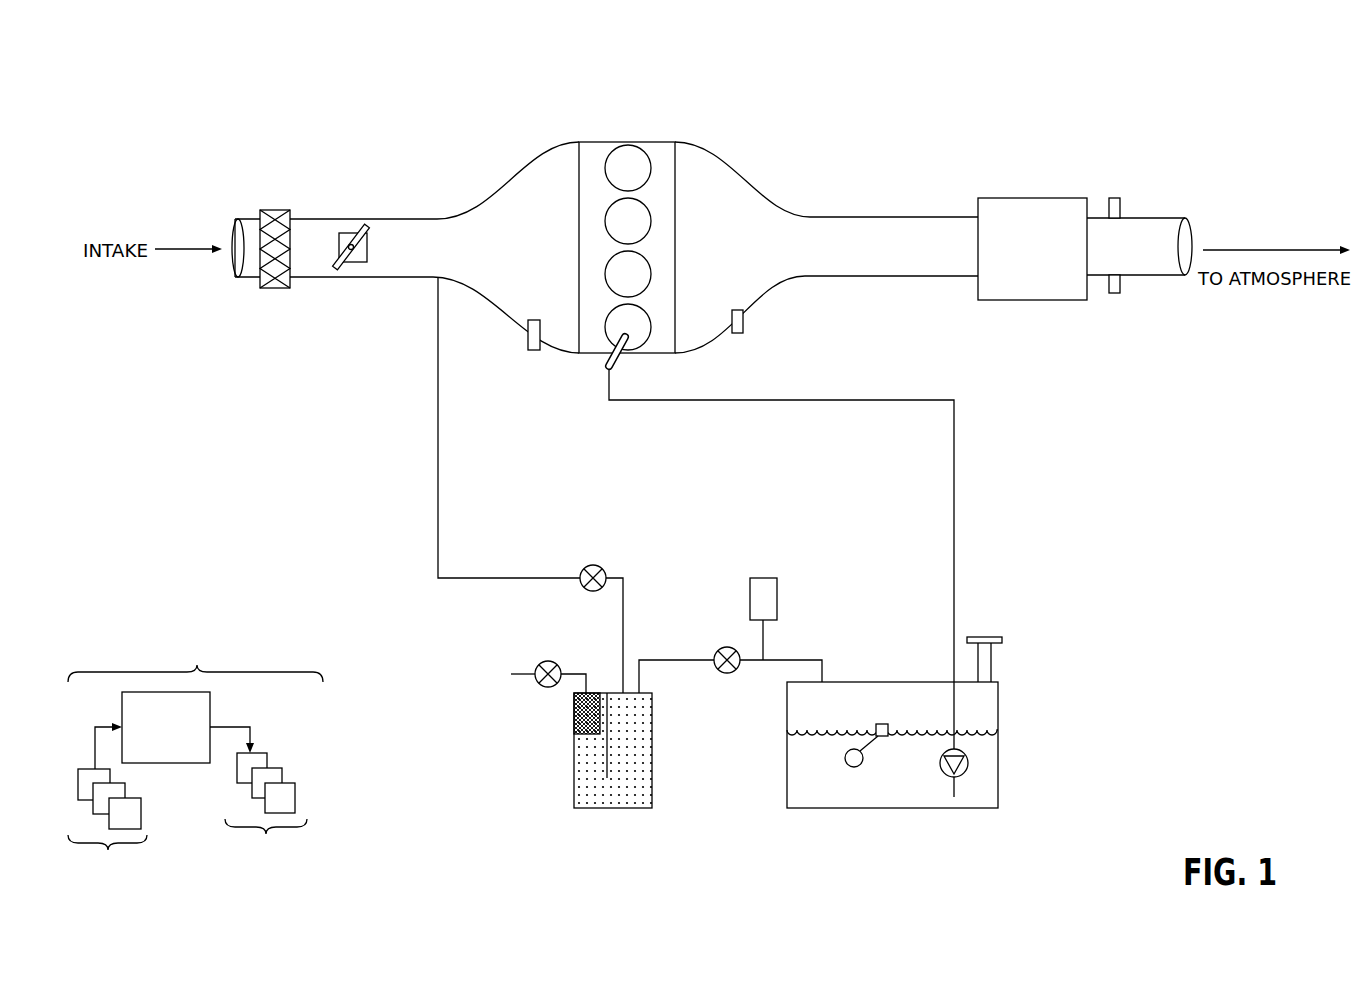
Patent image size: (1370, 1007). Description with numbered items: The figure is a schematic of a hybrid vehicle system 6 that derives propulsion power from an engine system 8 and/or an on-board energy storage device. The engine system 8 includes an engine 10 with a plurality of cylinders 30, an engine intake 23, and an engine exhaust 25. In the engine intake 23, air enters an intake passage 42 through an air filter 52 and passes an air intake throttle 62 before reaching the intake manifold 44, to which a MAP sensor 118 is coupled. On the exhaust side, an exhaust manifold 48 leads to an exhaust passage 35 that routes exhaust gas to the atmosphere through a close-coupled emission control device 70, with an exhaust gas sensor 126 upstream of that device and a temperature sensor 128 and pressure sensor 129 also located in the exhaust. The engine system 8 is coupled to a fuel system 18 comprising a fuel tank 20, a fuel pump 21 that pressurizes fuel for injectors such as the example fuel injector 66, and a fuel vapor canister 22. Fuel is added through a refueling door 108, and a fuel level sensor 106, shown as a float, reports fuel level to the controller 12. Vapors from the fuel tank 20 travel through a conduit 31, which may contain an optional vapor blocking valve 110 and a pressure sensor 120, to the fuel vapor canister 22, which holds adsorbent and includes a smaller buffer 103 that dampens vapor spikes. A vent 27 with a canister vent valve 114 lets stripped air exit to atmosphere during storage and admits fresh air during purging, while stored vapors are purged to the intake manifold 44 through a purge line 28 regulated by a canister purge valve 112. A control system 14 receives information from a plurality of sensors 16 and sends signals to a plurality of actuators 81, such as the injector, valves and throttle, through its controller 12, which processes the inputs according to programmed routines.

The hybrid vehicle system 6 is at (128, 122).
The engine system 8 is at (1218, 118).
The engine 10 is at (676, 230).
The controller 12 is at (174, 731).
The control system 14 is at (195, 651).
The sensors 16 is at (107, 830).
The fuel system 18 is at (1082, 688).
The fuel tank 20 is at (855, 682).
The fuel pump 21 is at (968, 768).
The fuel vapor canister 22 is at (645, 808).
The engine intake 23 is at (507, 173).
The engine exhaust 25 is at (787, 182).
The vent 27 is at (513, 674).
The purge line 28 is at (440, 410).
The cylinders 30 is at (650, 160).
The conduit 31 is at (782, 660).
The exhaust passage 35 is at (1165, 218).
The intake passage 42 is at (243, 278).
The intake manifold 44 is at (522, 256).
The exhaust manifold 48 is at (736, 256).
The air filter 52 is at (275, 210).
The air intake throttle 62 is at (364, 255).
The fuel injector 66 is at (616, 370).
The emission control device 70 is at (1010, 198).
The actuators 81 is at (266, 813).
The buffer 103 is at (574, 720).
The fuel level sensor 106 is at (888, 724).
The refueling door 108 is at (990, 637).
The vapor blocking valve 110 is at (722, 648).
The canister purge valve 112 is at (599, 567).
The canister vent valve 114 is at (556, 662).
The MAP sensor 118 is at (528, 328).
The pressure sensor 120 is at (777, 590).
The exhaust gas sensor 126 is at (743, 322).
The temperature sensor 128 is at (1115, 293).
The pressure sensor 129 is at (1115, 198).